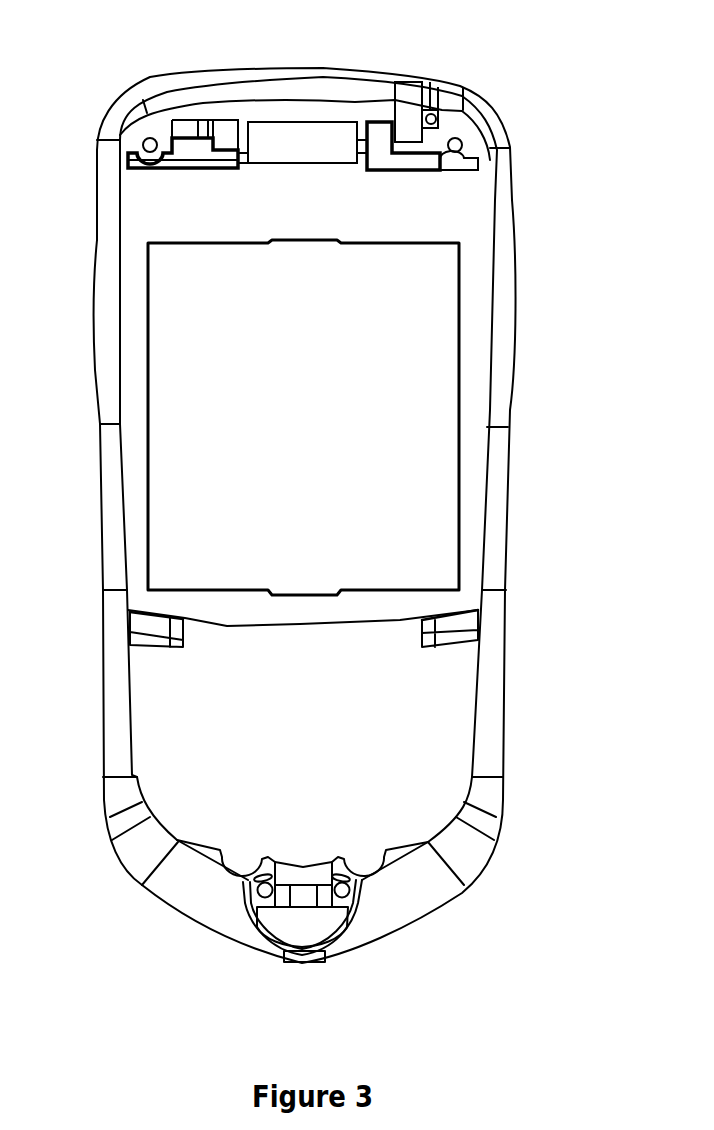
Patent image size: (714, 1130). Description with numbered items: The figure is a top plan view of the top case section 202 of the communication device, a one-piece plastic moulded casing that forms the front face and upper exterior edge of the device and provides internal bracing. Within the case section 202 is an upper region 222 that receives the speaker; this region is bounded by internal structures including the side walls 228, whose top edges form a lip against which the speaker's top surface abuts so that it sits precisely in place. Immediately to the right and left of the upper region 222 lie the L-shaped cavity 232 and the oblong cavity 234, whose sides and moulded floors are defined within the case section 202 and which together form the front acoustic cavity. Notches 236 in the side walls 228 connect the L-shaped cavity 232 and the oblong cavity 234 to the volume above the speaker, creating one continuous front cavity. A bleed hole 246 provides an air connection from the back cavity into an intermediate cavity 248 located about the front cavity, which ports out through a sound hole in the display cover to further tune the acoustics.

The top case section 202 is at (493, 700).
The upper region 222 is at (300, 123).
The side walls 228 is at (243, 130).
The L-shaped cavity 232 is at (427, 152).
The oblong cavity 234 is at (175, 157).
The notches 236 is at (243, 163).
The bleed hole 246 is at (207, 127).
The intermediate cavity 248 is at (177, 127).